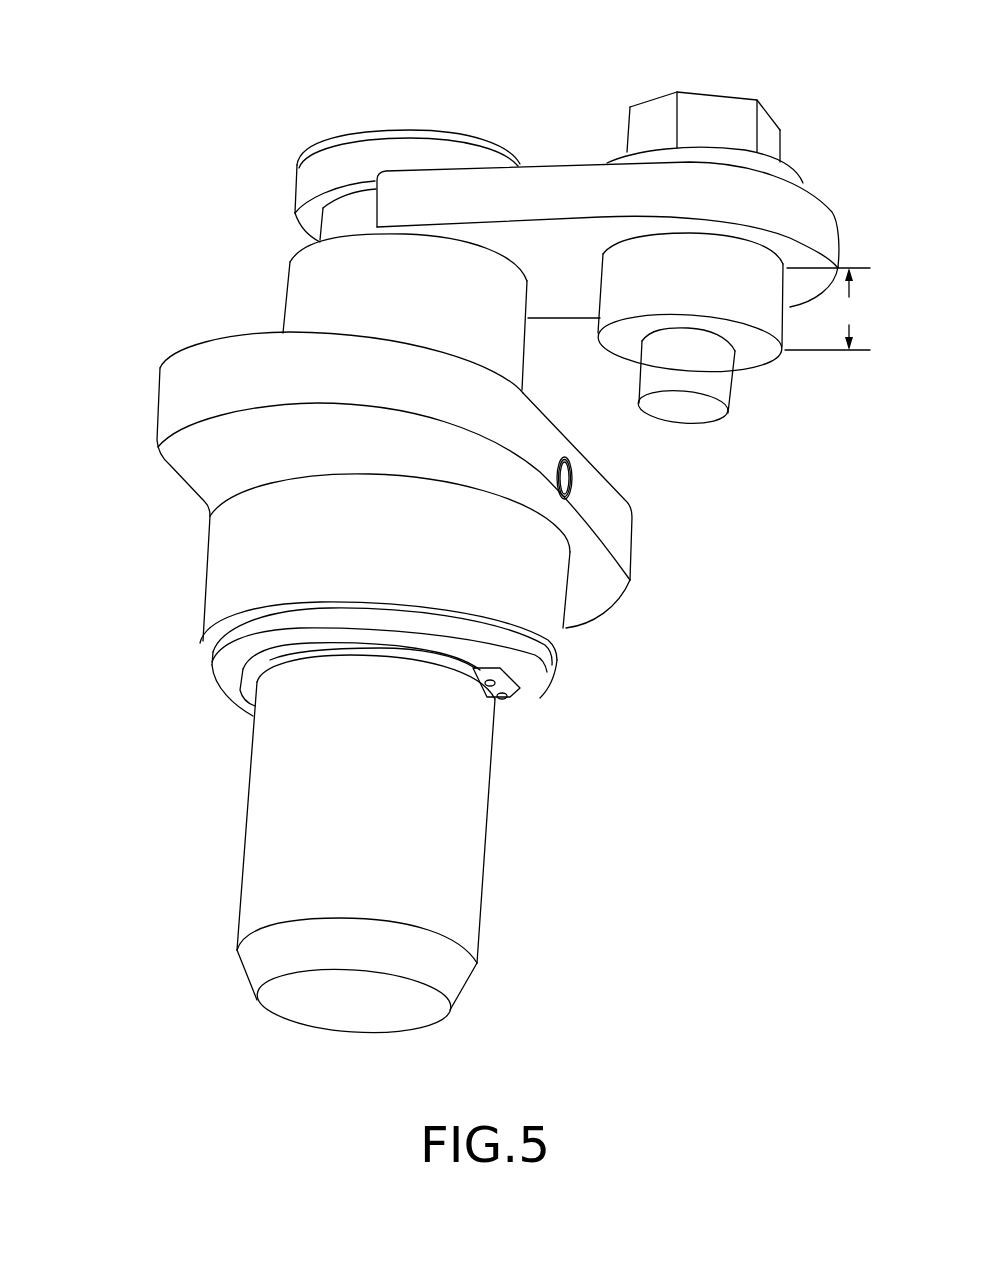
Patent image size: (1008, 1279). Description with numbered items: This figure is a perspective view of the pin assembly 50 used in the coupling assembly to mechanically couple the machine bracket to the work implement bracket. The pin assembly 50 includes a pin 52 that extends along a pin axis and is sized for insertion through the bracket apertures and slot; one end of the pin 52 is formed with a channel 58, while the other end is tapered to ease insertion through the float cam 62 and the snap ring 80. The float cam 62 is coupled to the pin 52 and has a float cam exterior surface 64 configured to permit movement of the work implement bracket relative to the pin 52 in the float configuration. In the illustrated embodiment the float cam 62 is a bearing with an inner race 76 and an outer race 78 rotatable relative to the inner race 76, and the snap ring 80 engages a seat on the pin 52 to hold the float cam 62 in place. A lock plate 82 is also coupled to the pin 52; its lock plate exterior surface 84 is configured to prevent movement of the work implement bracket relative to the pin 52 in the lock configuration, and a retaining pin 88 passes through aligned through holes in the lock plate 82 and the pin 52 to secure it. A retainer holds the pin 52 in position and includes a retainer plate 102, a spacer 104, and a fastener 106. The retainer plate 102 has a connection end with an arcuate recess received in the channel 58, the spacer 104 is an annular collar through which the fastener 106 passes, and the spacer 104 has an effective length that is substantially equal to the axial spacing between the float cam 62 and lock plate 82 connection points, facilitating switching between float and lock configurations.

The pin assembly 50 is at (303, 98).
The pin 52 is at (450, 842).
The channel 58 is at (290, 234).
The float cam 62 is at (550, 646).
The float cam exterior surface 64 is at (217, 594).
The inner race 76 is at (233, 687).
The outer race 78 is at (210, 652).
The snap ring 80 is at (500, 700).
The lock plate 82 is at (190, 459).
The lock plate exterior surface 84 is at (172, 401).
The retaining pin 88 is at (572, 478).
The retainer plate 102 is at (832, 220).
The spacer 104 is at (753, 307).
The fastener 106 is at (705, 410).